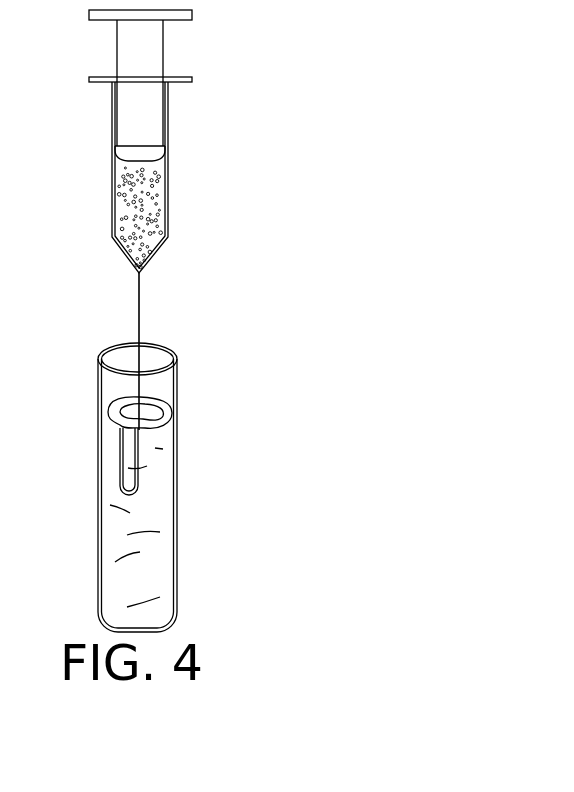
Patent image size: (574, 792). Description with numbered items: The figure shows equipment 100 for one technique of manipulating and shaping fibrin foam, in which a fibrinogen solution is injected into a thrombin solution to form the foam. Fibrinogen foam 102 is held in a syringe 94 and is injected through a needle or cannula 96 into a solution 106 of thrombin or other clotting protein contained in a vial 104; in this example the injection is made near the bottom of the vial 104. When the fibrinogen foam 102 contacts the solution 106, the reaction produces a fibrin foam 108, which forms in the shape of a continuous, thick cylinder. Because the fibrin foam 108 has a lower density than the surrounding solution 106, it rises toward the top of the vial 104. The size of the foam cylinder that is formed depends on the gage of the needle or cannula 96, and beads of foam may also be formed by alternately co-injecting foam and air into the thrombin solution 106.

The syringe 94 is at (168, 168).
The needle or cannula 96 is at (138, 312).
The fiber forming system 100 is at (203, 333).
The fibrinogen foam 102 is at (162, 218).
The vial 104 is at (176, 545).
The solution of thrombin or other clotting protein 106 is at (165, 493).
The fibrin foam 108 is at (120, 460).